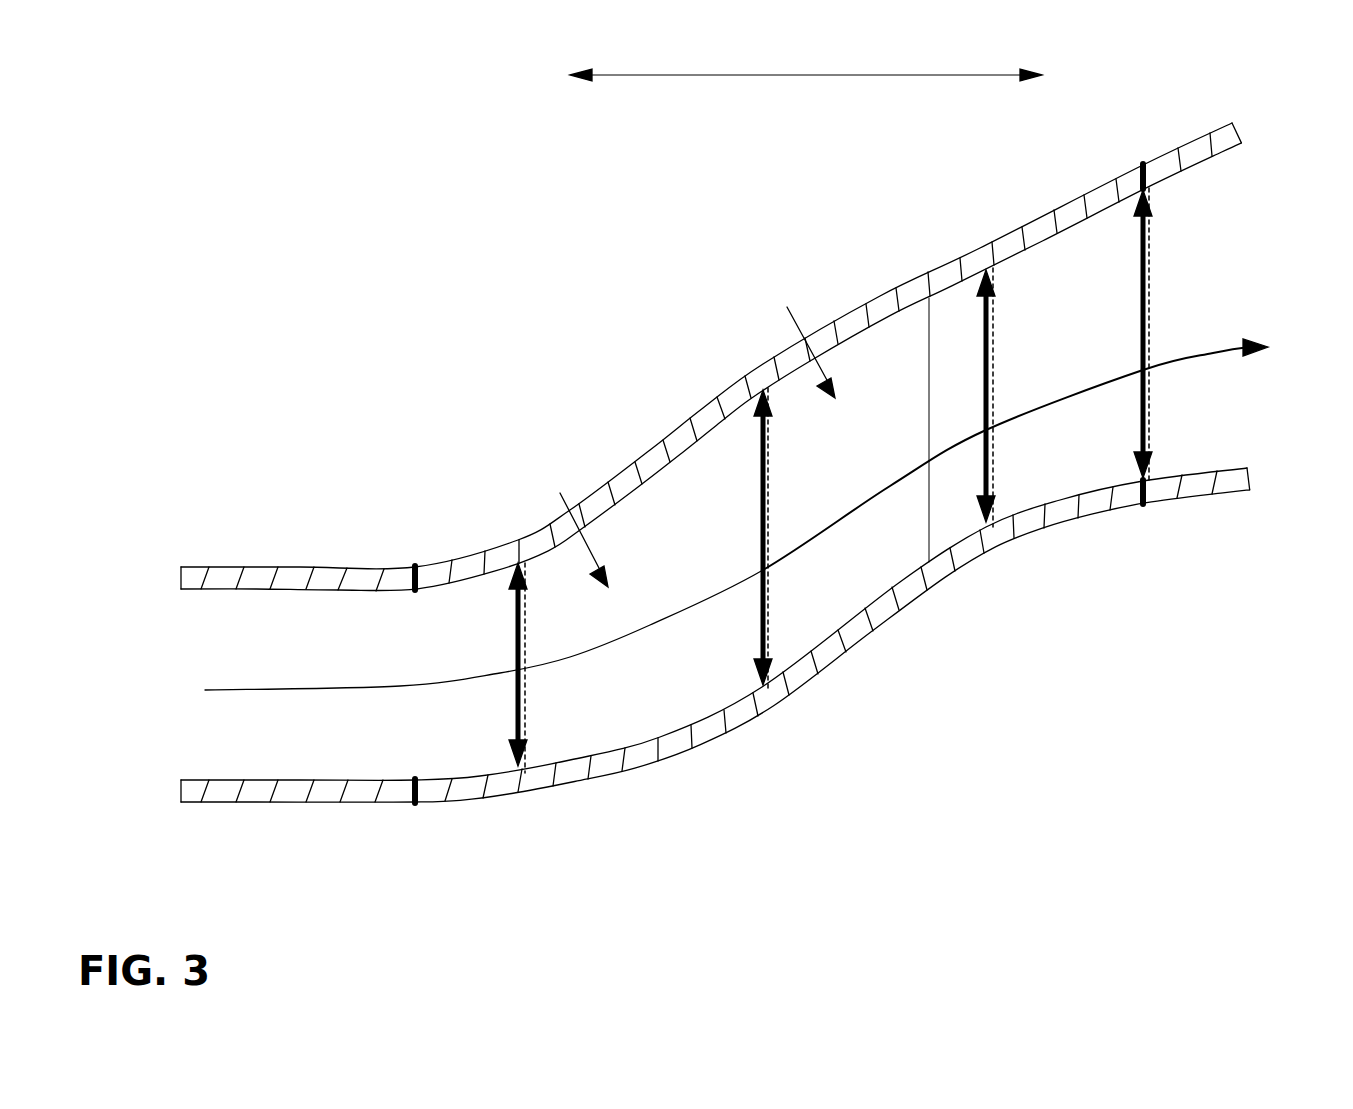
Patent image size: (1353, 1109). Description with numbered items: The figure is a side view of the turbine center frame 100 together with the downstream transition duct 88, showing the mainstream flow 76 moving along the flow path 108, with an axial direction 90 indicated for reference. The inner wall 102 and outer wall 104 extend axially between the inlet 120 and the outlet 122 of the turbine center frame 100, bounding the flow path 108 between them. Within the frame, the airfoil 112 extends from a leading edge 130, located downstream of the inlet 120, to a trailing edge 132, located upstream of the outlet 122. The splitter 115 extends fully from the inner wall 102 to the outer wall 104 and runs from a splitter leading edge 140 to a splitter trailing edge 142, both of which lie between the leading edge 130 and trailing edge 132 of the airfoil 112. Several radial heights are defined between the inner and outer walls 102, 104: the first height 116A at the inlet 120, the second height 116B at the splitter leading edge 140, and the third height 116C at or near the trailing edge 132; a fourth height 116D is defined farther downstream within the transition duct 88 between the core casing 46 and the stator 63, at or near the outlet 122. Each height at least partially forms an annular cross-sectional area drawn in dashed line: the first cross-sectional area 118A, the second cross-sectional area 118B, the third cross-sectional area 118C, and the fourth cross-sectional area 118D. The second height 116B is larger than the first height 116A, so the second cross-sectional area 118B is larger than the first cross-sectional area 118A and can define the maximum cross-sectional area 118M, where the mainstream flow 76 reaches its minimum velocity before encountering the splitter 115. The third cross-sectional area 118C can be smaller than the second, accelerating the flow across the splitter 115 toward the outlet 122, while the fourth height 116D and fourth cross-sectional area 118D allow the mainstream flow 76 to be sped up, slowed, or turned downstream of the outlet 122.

The core casing 46 is at (258, 580).
The stator 63 is at (265, 792).
The mainstream flow 76 is at (1044, 420).
The transition duct 88 is at (330, 681).
The axial direction 90 is at (817, 77).
The turbine center frame 100 is at (768, 246).
The inner wall 102 is at (892, 604).
The outer wall 104 is at (890, 307).
The flow path 108 is at (1200, 353).
The airfoil 112 is at (563, 528).
The splitter 115 is at (789, 345).
The first height 116A is at (513, 612).
The second height 116B is at (753, 455).
The third height 116C is at (978, 307).
The fourth height 116D is at (1140, 253).
The first cross-sectional area 118A is at (525, 703).
The second cross-sectional area 118B is at (856, 590).
The maximum cross-sectional area 118M is at (768, 600).
The third cross-sectional area 118C is at (993, 500).
The fourth cross-sectional area 118D is at (1149, 380).
The inlet 120 is at (408, 572).
The outlet 122 is at (1137, 506).
The leading edge 130 is at (514, 708).
The trailing edge 132 is at (980, 470).
The splitter leading edge 140 is at (757, 540).
The splitter trailing edge 142 is at (927, 427).